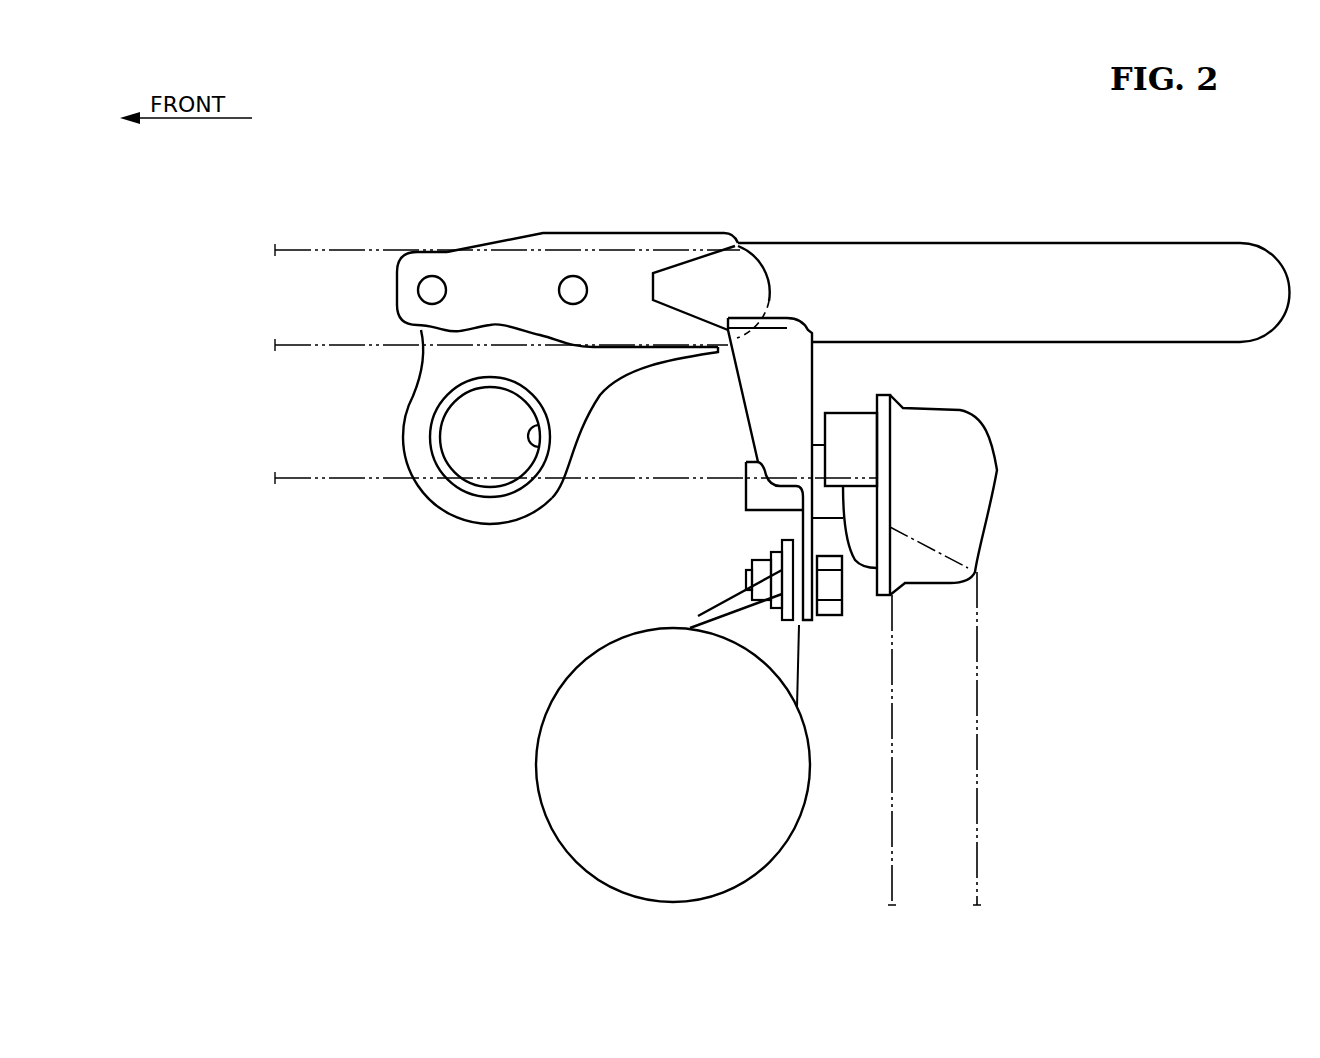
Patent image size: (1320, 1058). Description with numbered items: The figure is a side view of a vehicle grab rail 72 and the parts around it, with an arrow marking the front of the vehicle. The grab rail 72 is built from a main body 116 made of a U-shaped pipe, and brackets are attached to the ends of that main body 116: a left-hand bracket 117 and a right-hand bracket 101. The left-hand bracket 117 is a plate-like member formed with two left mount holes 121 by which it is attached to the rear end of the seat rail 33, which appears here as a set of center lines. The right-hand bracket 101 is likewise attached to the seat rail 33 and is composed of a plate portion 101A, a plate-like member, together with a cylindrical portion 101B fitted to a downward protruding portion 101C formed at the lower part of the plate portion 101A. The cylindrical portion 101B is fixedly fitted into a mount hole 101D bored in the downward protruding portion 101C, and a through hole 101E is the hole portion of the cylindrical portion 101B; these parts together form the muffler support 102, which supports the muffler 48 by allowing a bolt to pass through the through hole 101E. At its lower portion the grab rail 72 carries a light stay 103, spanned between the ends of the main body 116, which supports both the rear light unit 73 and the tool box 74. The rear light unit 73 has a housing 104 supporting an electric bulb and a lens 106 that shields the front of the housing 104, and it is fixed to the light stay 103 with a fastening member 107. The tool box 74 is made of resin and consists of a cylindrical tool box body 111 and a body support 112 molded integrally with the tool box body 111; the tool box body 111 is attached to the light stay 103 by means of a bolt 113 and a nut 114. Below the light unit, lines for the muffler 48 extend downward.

The seat rail 33 is at (365, 248).
The muffler 48 is at (980, 740).
The grab rail 72 is at (1092, 240).
The rear light unit 73 is at (1003, 461).
The tool box 74 is at (530, 765).
The right-hand bracket 101 is at (456, 445).
The plate portion 101A is at (423, 377).
The cylindrical portion 101B is at (414, 447).
The downward protruding portion 101C is at (493, 508).
The mount hole 101D is at (520, 492).
The through hole 101E is at (545, 447).
The muffler support 102 is at (440, 522).
The light stay 103 is at (763, 405).
The housing 104 is at (848, 420).
The lens 106 is at (962, 518).
The fastening member 107 is at (743, 497).
The tool box body 111 is at (573, 822).
The body support 112 is at (738, 620).
The bolt 113 is at (835, 585).
The nut 114 is at (762, 556).
The main body 116 is at (950, 243).
The left-hand bracket 117 is at (666, 230).
The left mount holes 121 is at (573, 283).